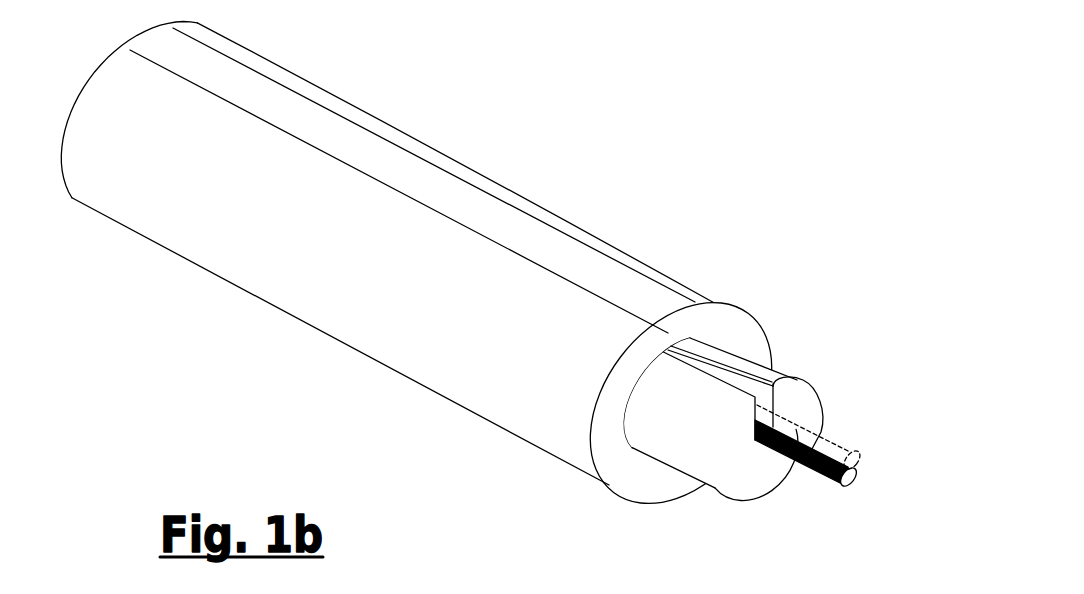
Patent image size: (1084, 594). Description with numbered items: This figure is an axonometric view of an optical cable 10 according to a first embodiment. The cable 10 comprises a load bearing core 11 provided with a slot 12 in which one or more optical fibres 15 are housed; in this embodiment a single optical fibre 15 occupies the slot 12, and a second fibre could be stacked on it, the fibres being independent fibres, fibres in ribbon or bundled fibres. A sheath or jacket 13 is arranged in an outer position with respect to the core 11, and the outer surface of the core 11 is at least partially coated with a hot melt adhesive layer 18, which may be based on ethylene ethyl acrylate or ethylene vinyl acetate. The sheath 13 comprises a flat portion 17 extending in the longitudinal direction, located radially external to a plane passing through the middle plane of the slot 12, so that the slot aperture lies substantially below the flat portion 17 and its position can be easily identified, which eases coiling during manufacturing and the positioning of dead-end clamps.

The cable 10 is at (501, 291).
The load bearing core 11 is at (805, 398).
The slot 12 is at (752, 385).
The sheath 13 is at (612, 404).
The optical fibres 15 is at (855, 473).
The flat portion 17 is at (567, 247).
The hot melt adhesive layer 18 is at (670, 445).